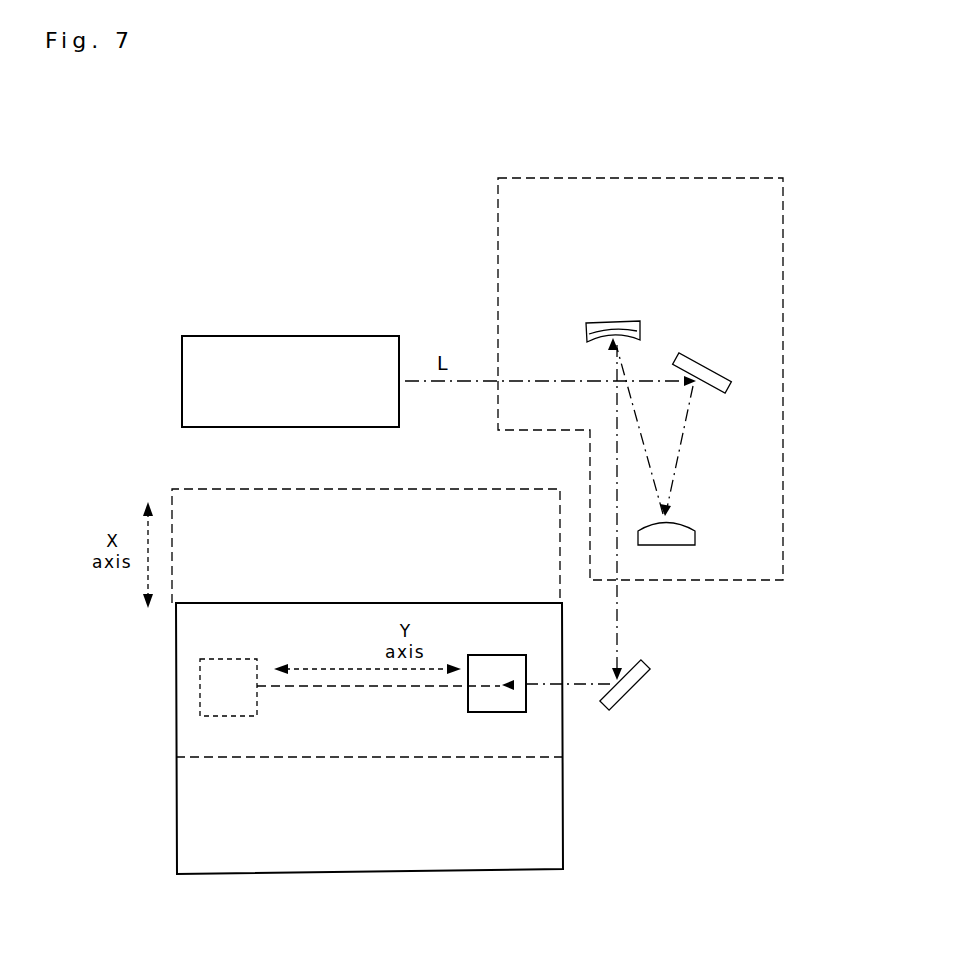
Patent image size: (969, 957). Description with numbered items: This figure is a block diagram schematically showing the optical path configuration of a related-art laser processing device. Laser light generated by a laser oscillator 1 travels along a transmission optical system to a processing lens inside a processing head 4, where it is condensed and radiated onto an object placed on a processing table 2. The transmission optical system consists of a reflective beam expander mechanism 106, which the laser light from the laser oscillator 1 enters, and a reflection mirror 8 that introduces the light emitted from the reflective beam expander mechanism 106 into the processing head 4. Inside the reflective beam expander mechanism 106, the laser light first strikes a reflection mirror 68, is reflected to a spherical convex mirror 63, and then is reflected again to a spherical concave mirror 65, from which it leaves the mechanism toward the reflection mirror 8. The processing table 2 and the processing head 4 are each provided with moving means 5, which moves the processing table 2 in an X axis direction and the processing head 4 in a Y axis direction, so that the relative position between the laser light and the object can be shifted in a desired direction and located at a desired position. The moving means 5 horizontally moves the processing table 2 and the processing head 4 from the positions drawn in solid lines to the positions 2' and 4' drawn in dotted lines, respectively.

The laser oscillator 1 is at (312, 336).
The reflective beam expander mechanism 106 is at (784, 230).
The spherical concave mirror 65 is at (600, 323).
The reflection mirror 68 is at (696, 372).
The spherical convex mirror 63 is at (686, 525).
The processing table 2 is at (339, 738).
The processing table position 2' is at (328, 532).
The moving means 5 is at (366, 668).
The processing head 4 is at (497, 665).
The processing head position 4' is at (181, 687).
The reflection mirror 8 is at (630, 700).